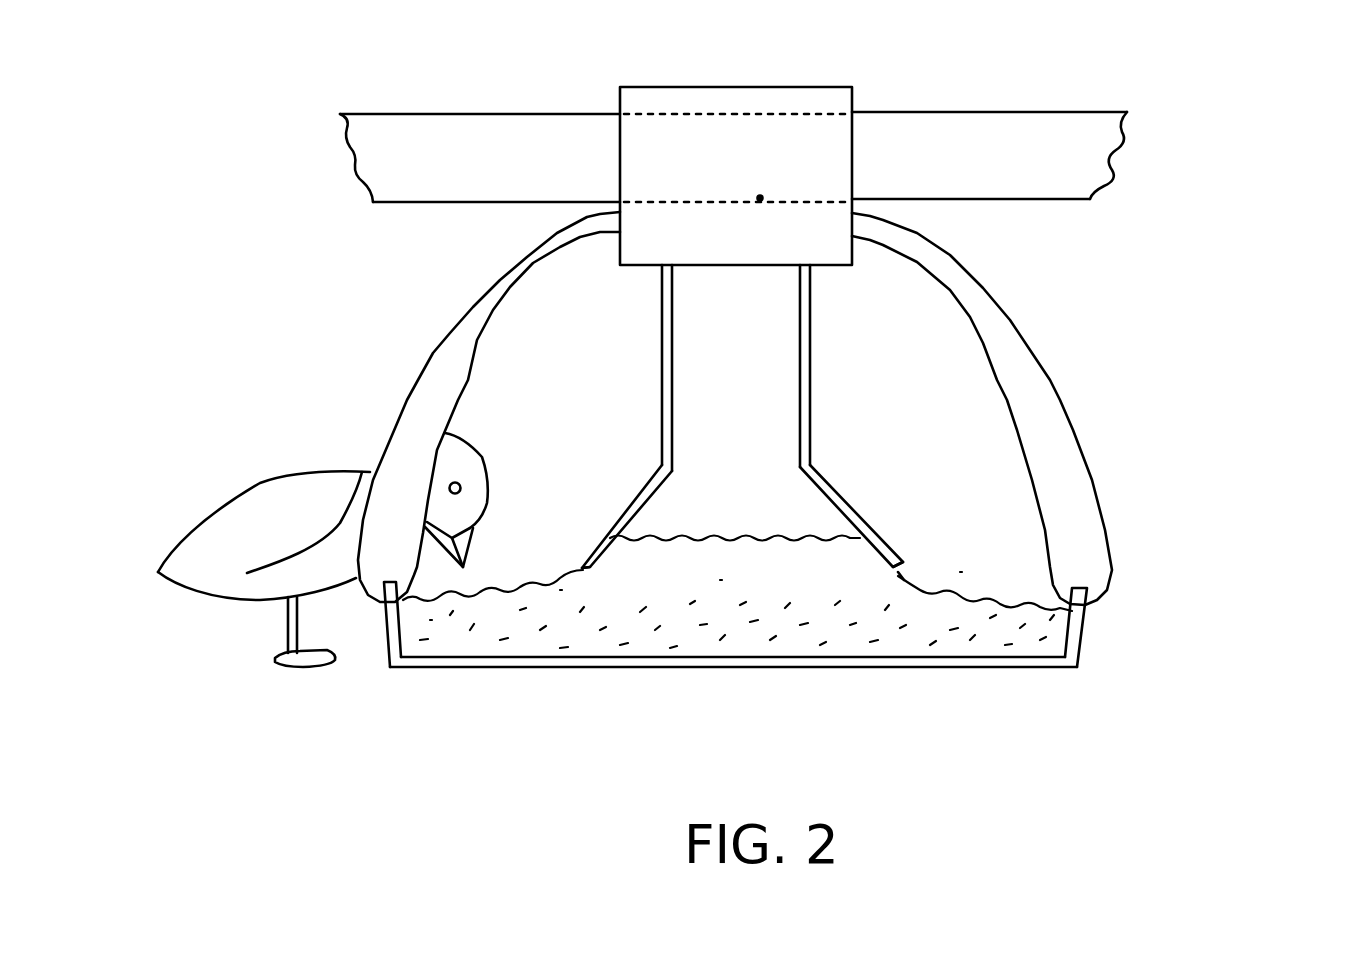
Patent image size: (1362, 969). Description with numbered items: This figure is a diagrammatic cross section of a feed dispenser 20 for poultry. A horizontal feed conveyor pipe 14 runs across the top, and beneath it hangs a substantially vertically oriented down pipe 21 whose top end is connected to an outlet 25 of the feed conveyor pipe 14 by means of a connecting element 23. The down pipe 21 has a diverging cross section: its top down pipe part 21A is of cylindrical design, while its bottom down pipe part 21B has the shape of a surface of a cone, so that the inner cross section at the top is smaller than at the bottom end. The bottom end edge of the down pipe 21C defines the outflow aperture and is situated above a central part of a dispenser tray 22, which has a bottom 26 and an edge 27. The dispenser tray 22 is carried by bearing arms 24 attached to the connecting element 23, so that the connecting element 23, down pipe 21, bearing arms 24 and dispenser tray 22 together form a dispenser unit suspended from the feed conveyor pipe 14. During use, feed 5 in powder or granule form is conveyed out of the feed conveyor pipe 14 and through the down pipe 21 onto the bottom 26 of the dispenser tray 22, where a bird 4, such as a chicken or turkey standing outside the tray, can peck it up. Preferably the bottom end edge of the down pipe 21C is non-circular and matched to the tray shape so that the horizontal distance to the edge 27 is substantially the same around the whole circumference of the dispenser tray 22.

The bird 4 is at (242, 497).
The feed 5 is at (928, 618).
The feed conveyor pipe 14 is at (953, 110).
The feed dispenser 20 is at (1202, 292).
The down pipe 21 is at (715, 422).
The top down pipe part 21A is at (660, 351).
The bottom down pipe part 21B is at (627, 503).
The bottom end edge of the down pipe 21C is at (582, 562).
The dispenser tray 22 is at (779, 664).
The connecting element 23 is at (693, 85).
The bearing arms 24 is at (1050, 378).
The outlet 25 is at (760, 198).
The bottom 26 is at (600, 670).
The edge 27 is at (1087, 633).